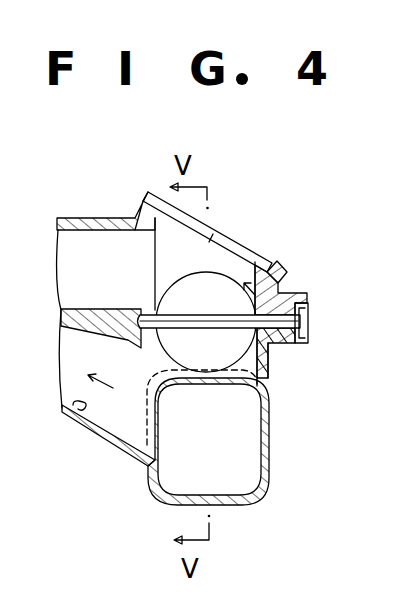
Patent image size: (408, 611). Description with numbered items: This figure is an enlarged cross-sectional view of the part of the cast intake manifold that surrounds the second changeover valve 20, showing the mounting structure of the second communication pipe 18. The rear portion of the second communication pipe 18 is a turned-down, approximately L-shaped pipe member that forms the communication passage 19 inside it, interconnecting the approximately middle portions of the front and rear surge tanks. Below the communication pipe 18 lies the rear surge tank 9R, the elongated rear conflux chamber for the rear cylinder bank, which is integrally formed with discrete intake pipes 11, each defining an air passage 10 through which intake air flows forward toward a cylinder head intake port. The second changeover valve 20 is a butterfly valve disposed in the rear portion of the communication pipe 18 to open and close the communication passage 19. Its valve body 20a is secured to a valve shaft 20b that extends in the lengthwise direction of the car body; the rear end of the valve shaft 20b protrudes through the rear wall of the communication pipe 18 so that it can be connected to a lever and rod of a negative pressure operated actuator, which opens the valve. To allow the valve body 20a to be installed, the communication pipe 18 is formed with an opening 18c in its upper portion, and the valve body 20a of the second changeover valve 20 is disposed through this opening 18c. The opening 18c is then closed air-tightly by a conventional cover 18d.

The rear surge tank 9R is at (270, 455).
The air passage 10 is at (68, 416).
The discrete intake pipe 11 is at (97, 434).
The second communication pipe 18 is at (78, 226).
The opening 18c is at (216, 238).
The cover 18d is at (252, 254).
The communication passage 19 is at (80, 310).
The second changeover valve 20 is at (280, 266).
The valve body 20a is at (264, 384).
The valve shaft 20b is at (300, 346).